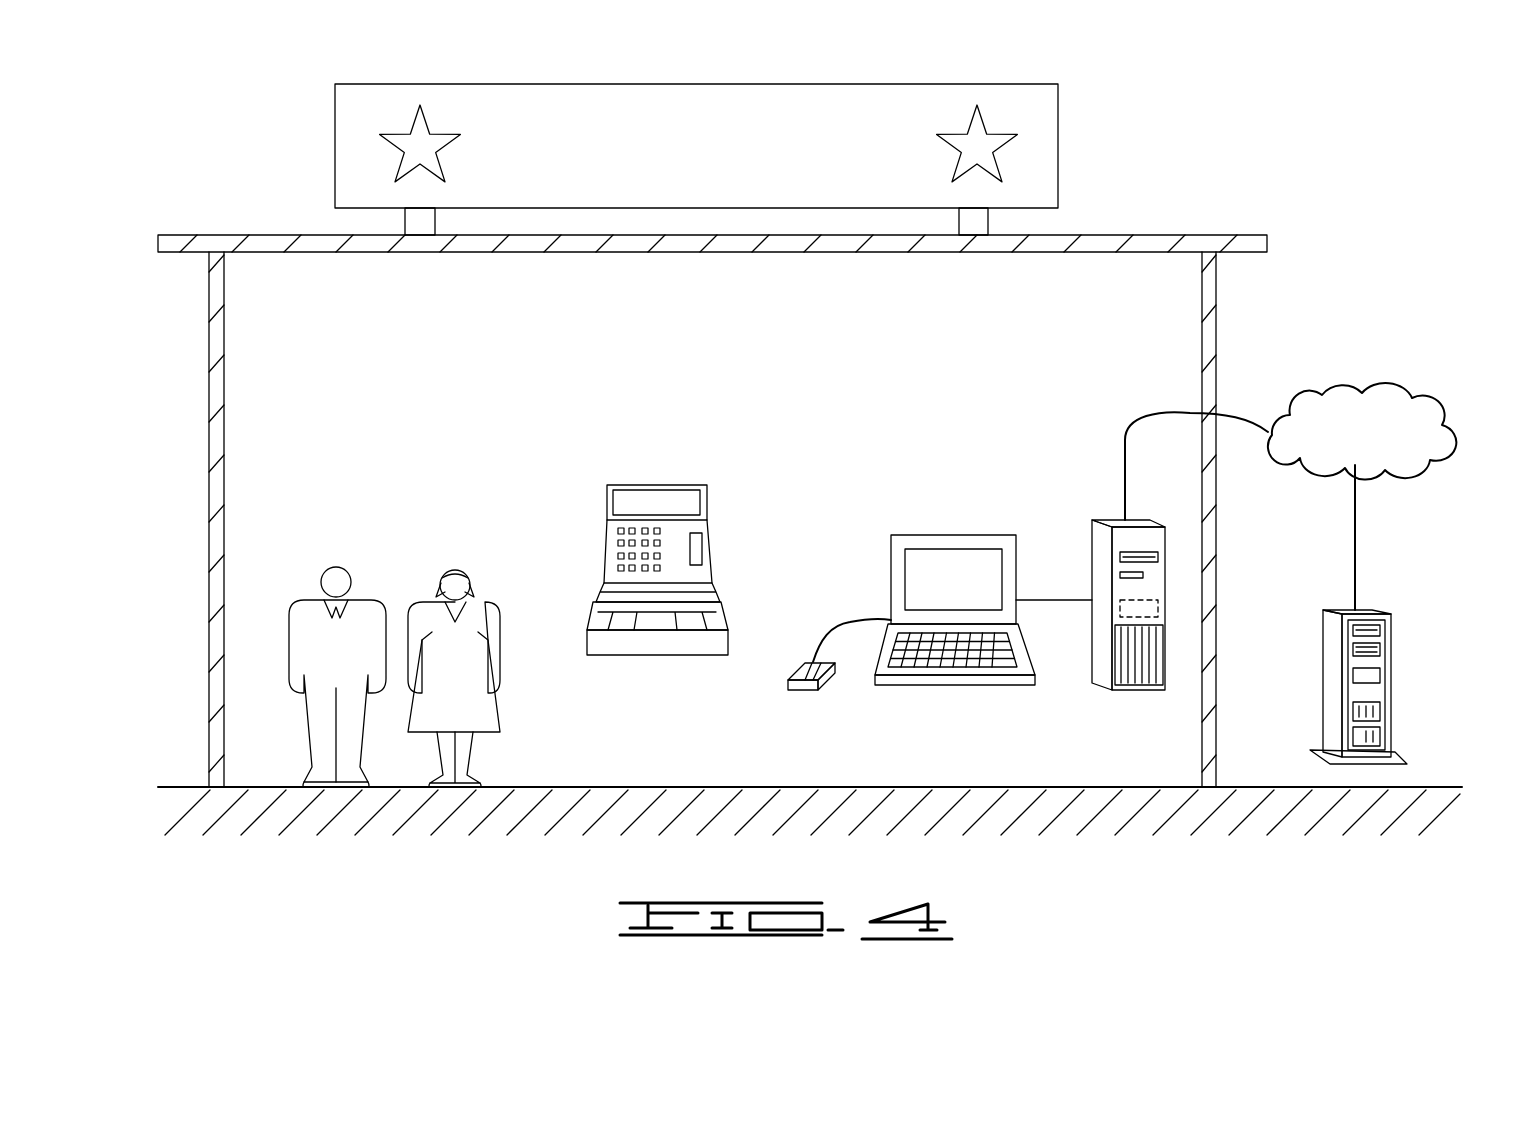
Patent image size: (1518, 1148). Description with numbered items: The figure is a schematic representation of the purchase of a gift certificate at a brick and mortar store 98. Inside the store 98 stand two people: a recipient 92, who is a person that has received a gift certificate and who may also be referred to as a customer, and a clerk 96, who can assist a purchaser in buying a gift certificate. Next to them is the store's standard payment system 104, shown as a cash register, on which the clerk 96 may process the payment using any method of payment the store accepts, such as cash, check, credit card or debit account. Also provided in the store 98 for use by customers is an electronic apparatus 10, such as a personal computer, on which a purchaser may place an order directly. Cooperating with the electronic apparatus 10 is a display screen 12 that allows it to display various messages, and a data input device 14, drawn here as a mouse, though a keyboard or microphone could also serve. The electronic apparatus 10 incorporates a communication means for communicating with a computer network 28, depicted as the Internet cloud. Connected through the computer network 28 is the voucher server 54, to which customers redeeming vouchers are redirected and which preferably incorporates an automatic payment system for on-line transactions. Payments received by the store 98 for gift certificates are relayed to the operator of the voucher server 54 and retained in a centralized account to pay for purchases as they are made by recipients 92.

The brick and mortar store 98 is at (1180, 228).
The recipient 92 is at (302, 598).
The clerk 96 is at (486, 600).
The standard payment system 104 is at (672, 485).
The data input device 14 is at (803, 660).
The display screen 12 is at (890, 578).
The electronic apparatus 10 is at (1090, 530).
The computer network 28 is at (1325, 392).
The voucher server 54 is at (1392, 695).